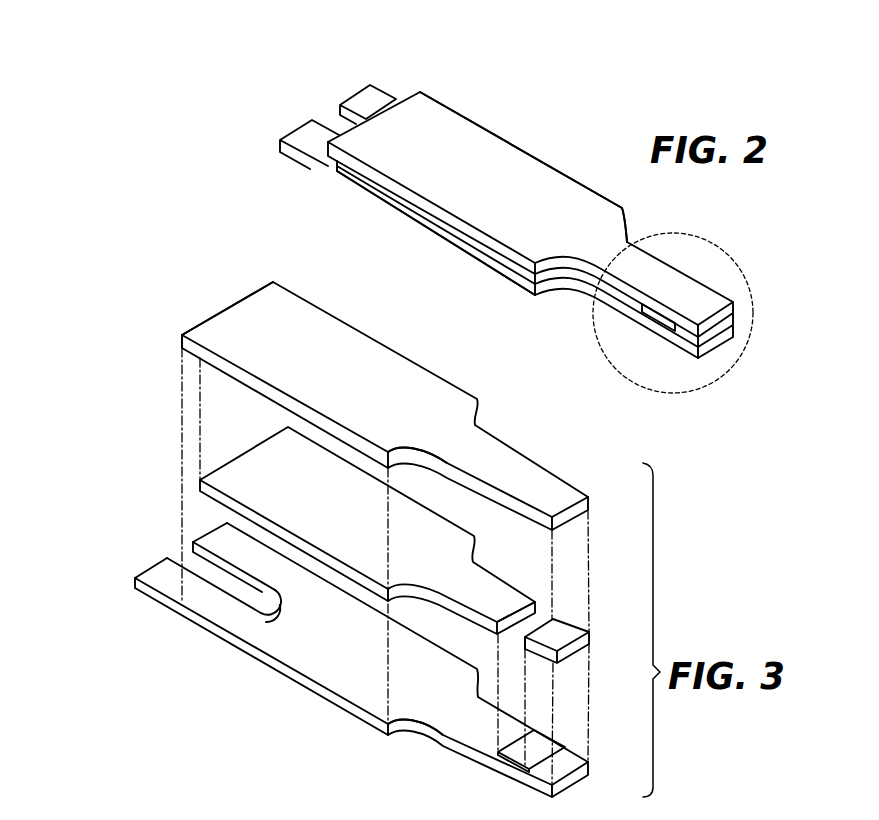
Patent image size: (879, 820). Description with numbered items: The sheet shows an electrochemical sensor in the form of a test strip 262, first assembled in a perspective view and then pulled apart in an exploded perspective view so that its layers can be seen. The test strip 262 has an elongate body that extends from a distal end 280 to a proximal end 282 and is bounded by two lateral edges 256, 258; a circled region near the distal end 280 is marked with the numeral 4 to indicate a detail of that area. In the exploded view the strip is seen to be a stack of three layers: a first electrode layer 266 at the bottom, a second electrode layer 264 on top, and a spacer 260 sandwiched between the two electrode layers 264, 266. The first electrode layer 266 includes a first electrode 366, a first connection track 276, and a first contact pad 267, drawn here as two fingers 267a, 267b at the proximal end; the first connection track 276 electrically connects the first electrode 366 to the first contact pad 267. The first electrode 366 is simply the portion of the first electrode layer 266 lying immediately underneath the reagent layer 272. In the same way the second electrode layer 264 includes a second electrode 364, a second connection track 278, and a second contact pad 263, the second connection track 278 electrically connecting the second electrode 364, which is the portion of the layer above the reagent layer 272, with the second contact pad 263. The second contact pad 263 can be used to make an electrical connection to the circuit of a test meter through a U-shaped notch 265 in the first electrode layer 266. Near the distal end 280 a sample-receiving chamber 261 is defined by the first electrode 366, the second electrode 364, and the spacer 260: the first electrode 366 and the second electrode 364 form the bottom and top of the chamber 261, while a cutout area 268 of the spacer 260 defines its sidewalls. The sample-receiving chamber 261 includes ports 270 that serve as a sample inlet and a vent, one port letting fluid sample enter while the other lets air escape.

In FIG. 2, the test strip 262 is at (490, 190).
In FIG. 3, the test strip 262 is at (335, 543).
In FIG. 2, the second connection track 278 is at (505, 182).
In FIG. 3, the second connection track 278 is at (320, 347).
In FIG. 2, the lateral edge 256 is at (487, 256).
In FIG. 2, the lateral edge 258 is at (628, 226).
In FIG. 2, the distal end 280 is at (690, 293).
In FIG. 2, the ports 270 is at (657, 320).
In FIG. 3, the ports 270 is at (547, 606).
In FIG. 2, the proximal end 282 is at (420, 100).
In FIG. 2, the first contact pad 267 is at (286, 86).
In FIG. 2, the first tab 267a is at (310, 137).
In FIG. 3, the first tab 267a is at (190, 588).
In FIG. 2, the second tab 267b is at (366, 100).
In FIG. 3, the second tab 267b is at (183, 565).
In FIG. 2, the second contact pad 263 is at (316, 146).
In FIG. 3, the second contact pad 263 is at (180, 335).
In FIG. 2, the detail view indicator 4 is at (625, 246).
In FIG. 3, the second electrode layer 264 is at (266, 276).
In FIG. 3, the spacer 260 is at (195, 477).
In FIG. 3, the sample-receiving chamber 261 is at (533, 617).
In FIG. 3, the cutout area 268 is at (534, 621).
In FIG. 3, the second electrode 364 is at (514, 513).
In FIG. 3, the first connection track 276 is at (357, 688).
In FIG. 3, the first electrode 366 is at (506, 764).
In FIG. 3, the reagent layer 272 is at (540, 740).
In FIG. 3, the first electrode layer 266 is at (222, 519).
In FIG. 3, the U-shaped notch 265 is at (214, 632).